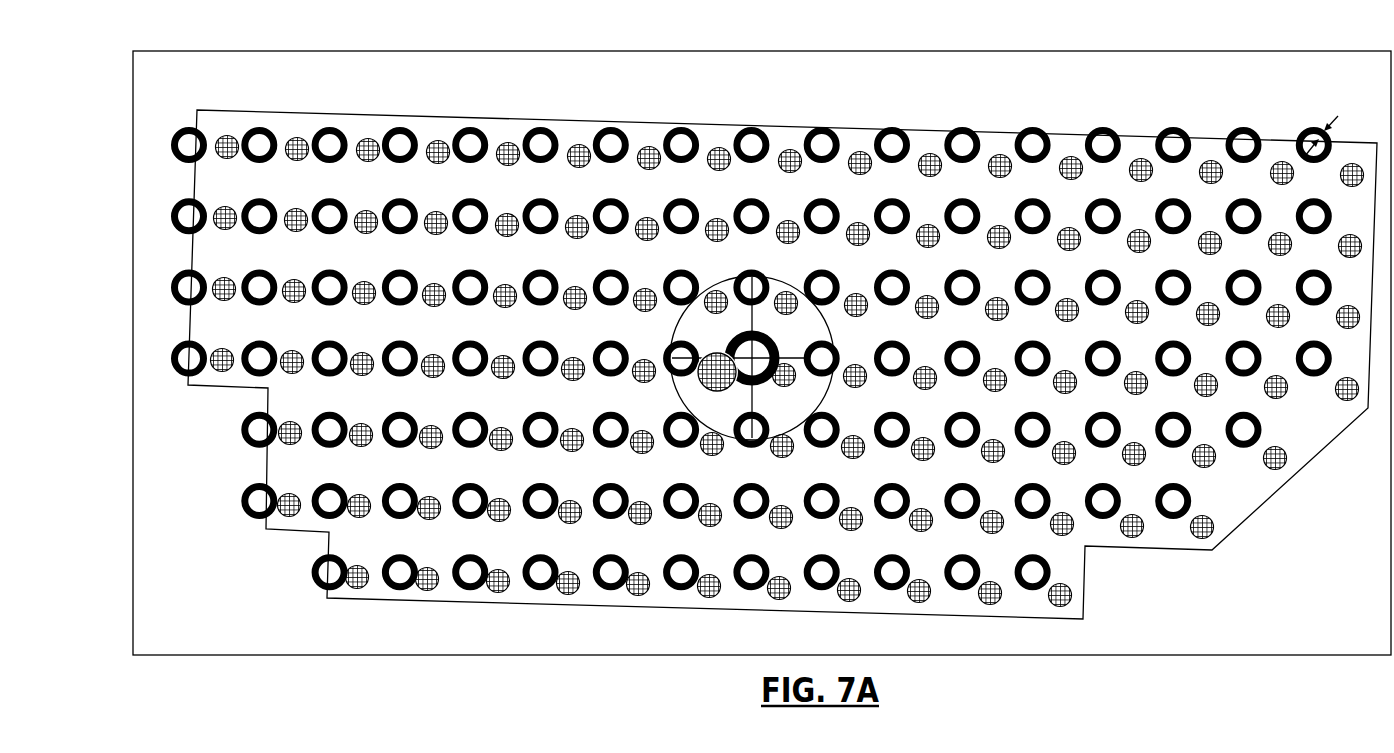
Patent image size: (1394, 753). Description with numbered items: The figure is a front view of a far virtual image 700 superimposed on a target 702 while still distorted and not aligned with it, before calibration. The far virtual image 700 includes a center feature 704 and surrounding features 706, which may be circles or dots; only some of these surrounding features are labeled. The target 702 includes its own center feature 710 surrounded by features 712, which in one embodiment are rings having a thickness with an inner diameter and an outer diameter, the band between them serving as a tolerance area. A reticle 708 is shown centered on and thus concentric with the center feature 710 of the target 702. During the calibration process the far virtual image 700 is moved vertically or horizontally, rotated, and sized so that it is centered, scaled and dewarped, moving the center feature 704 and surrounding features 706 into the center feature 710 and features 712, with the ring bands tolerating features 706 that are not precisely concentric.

The far virtual image 700 is at (229, 110).
The target 702 is at (277, 51).
The center feature 704 is at (705, 379).
The surrounding features 706 is at (650, 146).
The reticle 708 is at (735, 440).
The center feature 710 is at (740, 337).
The features 712 is at (535, 127).